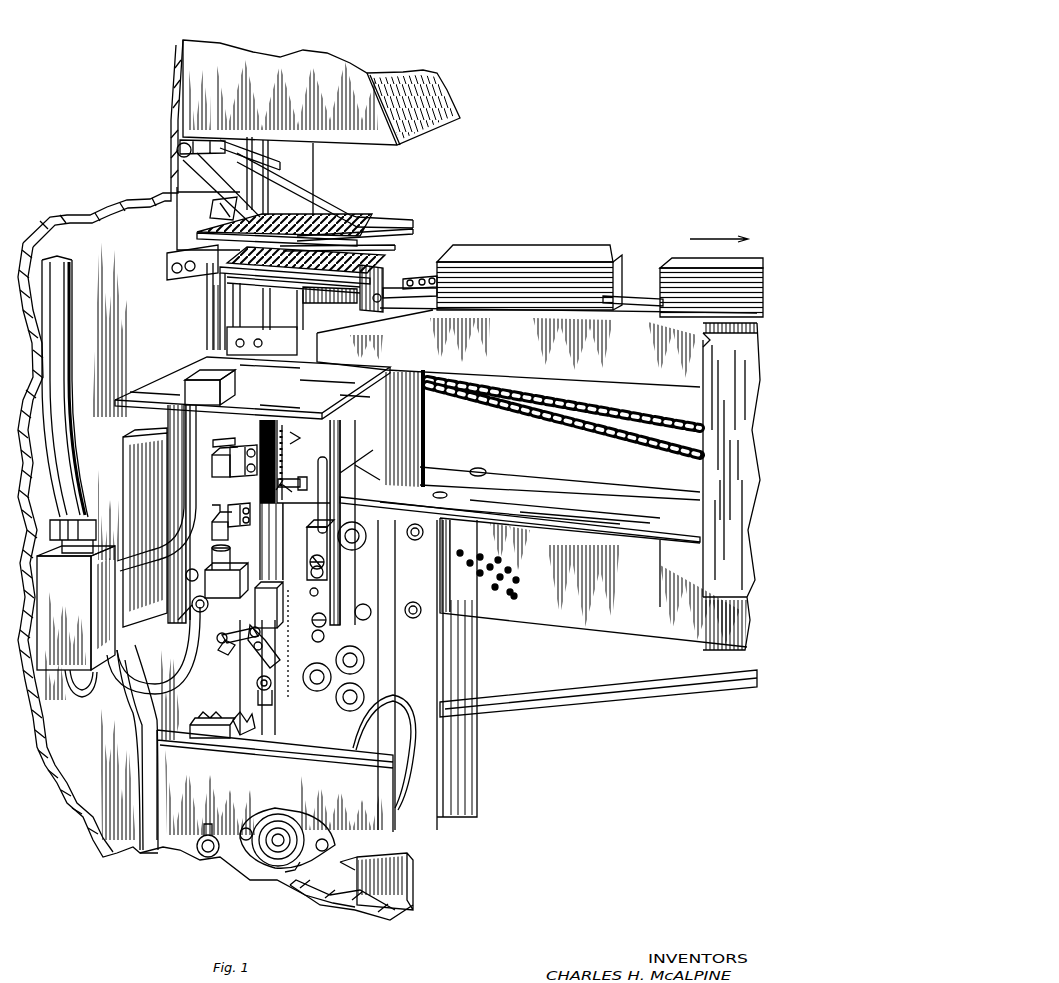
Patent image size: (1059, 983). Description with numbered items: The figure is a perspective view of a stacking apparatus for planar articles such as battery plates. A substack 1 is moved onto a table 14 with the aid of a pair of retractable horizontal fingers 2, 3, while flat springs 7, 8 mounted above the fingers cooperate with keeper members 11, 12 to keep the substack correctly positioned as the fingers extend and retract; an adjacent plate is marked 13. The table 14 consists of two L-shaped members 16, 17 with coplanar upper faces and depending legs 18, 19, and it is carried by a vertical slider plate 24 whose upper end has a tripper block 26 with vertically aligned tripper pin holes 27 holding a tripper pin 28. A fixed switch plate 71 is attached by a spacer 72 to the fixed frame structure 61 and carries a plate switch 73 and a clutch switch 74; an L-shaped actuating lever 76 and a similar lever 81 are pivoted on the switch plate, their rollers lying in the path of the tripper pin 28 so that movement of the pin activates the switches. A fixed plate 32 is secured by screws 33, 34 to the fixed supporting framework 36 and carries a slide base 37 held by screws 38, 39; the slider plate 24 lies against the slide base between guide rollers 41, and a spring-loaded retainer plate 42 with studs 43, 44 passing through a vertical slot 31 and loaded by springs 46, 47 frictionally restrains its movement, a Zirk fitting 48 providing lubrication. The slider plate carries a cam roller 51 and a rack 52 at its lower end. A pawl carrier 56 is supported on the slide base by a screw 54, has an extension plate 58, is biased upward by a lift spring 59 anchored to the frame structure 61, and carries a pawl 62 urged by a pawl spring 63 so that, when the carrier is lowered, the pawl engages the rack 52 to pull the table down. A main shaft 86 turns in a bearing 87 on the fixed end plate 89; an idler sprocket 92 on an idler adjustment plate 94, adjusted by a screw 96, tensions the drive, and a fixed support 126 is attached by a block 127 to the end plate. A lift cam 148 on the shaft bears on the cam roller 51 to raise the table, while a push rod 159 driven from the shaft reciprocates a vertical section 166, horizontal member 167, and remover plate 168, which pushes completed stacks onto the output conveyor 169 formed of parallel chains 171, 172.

The substack 1 is at (322, 222).
The finger 2 is at (382, 249).
The finger 3 is at (400, 242).
The flat spring 7 is at (177, 157).
The flat spring 8 is at (322, 204).
The keeper member 11 is at (206, 210).
The keeper member 12 is at (270, 172).
The lower plate 13 is at (316, 258).
The table 14 is at (393, 264).
The L-shaped member 16 is at (300, 287).
The L-shaped member 17 is at (383, 278).
The leg 18 is at (378, 300).
The leg 19 is at (306, 314).
The slider plate 24 is at (338, 429).
The tripper block 26 is at (298, 438).
The tripper pin holes 27 is at (282, 490).
The tripper pin 28 is at (302, 476).
The vertical slot 31 is at (329, 468).
The fixed plate 32 is at (440, 810).
The screw 33 is at (414, 541).
The screw 34 is at (415, 617).
The fixed supporting framework 36 is at (600, 635).
The slide base 37 is at (374, 572).
The screw 38 is at (256, 614).
The screw 39 is at (372, 615).
The guide rollers 41 is at (367, 536).
The retainer plate 42 is at (310, 542).
The stud 43 is at (324, 572).
The stud 44 is at (325, 643).
The spring 46 is at (335, 560).
The spring 47 is at (330, 620).
The Zirk fitting 48 is at (322, 592).
The cam roller 51 is at (339, 678).
The rack 52 is at (302, 570).
The screw 54 is at (258, 685).
The pawl carrier 56 is at (270, 723).
The extension plate 58 is at (246, 640).
The lift spring 59 is at (197, 640).
The fixed frame structure 61 is at (72, 788).
The pawl 62 is at (270, 665).
The pawl spring 63 is at (228, 656).
The switch plate 71 is at (176, 607).
The spacer 72 is at (135, 470).
The plate switch 73 is at (232, 388).
The clutch switch 74 is at (222, 598).
The actuating lever 76 is at (232, 452).
The lever 81 is at (229, 532).
The main shaft 86 is at (275, 855).
The bearing 87 is at (290, 815).
The fixed end plate 89 is at (395, 828).
The idler sprocket 92 is at (240, 736).
The idler adjustment plate 94 is at (200, 738).
The screw 96 is at (214, 830).
The fixed support 126 is at (408, 876).
The block 127 is at (350, 895).
The lift cam 148 is at (393, 711).
The push rod 159 is at (568, 706).
The vertical section 166 is at (412, 420).
The horizontal member 167 is at (294, 343).
The remover plate 168 is at (213, 300).
The output conveyor 169 is at (640, 283).
The chain 171 is at (398, 296).
The chain 172 is at (437, 265).